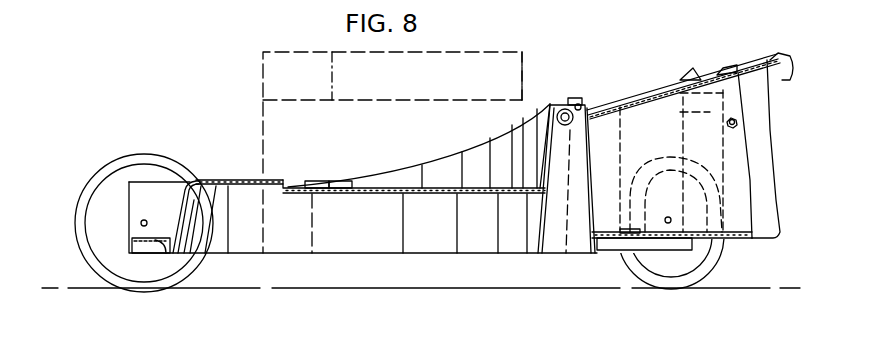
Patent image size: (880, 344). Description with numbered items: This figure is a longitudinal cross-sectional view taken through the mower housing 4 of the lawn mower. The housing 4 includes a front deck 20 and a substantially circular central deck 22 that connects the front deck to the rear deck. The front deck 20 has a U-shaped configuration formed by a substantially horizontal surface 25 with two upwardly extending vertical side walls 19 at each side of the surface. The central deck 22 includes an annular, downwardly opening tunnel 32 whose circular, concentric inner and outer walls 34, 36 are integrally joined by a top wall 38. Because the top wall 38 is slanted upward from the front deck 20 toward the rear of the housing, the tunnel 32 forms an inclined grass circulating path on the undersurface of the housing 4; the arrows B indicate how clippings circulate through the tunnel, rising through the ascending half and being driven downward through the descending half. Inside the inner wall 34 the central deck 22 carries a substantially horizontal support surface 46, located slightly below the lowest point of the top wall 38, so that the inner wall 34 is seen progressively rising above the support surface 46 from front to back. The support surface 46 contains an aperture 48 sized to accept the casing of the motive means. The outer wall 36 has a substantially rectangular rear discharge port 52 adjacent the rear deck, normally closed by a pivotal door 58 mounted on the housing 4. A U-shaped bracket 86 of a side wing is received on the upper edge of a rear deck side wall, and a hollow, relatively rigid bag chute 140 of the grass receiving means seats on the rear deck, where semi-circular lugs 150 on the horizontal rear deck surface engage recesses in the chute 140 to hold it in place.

The housing 4 is at (218, 142).
The vertical side walls 19 is at (165, 192).
The front deck 20 is at (125, 196).
The central deck 22 is at (534, 118).
The horizontal surface 25 is at (160, 253).
The tunnel 32 is at (243, 178).
The inner wall 34 is at (290, 186).
The outer wall 36 is at (168, 240).
The top wall 38 is at (262, 185).
The support surface 46 is at (500, 194).
The aperture 48 is at (386, 197).
The rear discharge port 52 is at (584, 163).
The door 58 is at (648, 81).
The U-shaped bracket 86 is at (628, 236).
The bag chute 140 is at (722, 250).
The lugs 150 is at (703, 77).
The arrows B is at (215, 198).